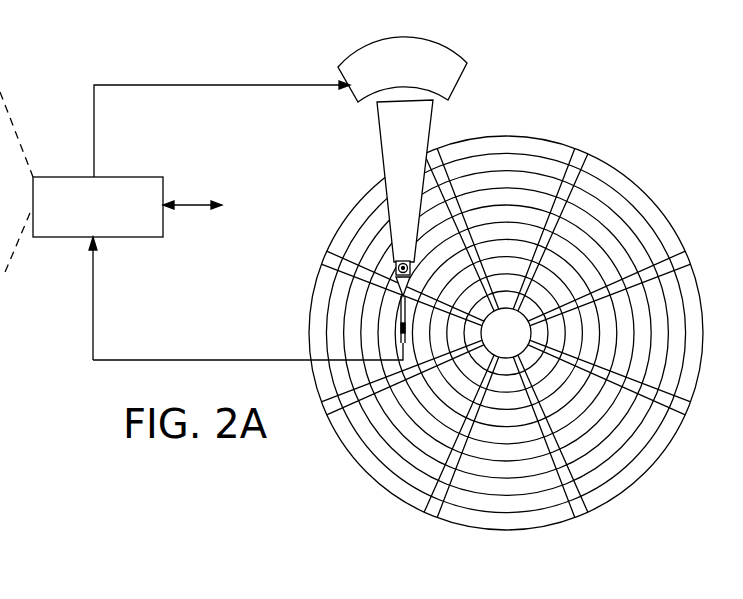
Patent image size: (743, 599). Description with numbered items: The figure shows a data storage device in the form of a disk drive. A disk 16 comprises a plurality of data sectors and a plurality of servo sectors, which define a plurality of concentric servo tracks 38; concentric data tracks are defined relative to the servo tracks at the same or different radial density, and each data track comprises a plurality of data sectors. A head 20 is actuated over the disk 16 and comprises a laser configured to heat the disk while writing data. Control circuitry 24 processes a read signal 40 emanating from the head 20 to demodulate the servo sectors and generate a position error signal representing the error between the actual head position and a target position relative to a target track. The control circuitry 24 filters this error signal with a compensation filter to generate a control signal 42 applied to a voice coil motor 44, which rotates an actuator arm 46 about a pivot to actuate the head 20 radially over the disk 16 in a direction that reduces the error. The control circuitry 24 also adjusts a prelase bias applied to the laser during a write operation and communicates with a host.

The disk 16 is at (639, 185).
The head 20 is at (396, 329).
The control circuitry 24 is at (132, 177).
The servo tracks 38 is at (492, 162).
The read signal 40 is at (233, 358).
The control signal 42 is at (94, 117).
The voice coil motor 44 is at (357, 98).
The actuator arm 46 is at (388, 147).